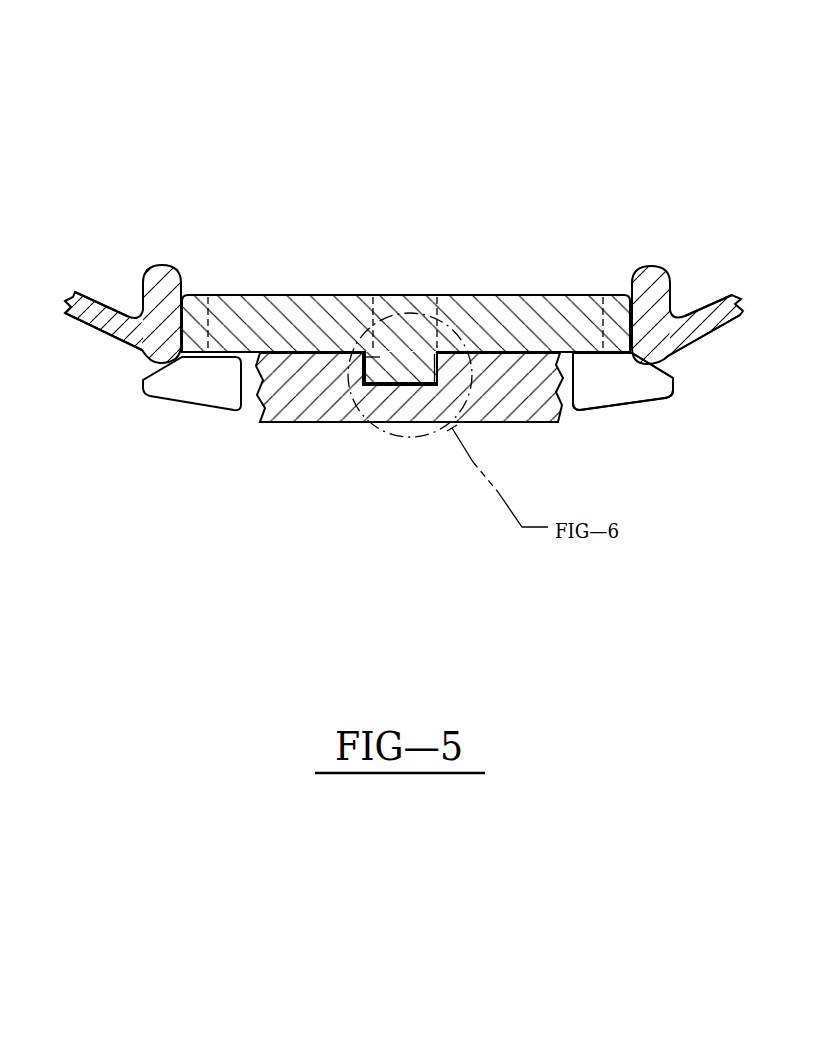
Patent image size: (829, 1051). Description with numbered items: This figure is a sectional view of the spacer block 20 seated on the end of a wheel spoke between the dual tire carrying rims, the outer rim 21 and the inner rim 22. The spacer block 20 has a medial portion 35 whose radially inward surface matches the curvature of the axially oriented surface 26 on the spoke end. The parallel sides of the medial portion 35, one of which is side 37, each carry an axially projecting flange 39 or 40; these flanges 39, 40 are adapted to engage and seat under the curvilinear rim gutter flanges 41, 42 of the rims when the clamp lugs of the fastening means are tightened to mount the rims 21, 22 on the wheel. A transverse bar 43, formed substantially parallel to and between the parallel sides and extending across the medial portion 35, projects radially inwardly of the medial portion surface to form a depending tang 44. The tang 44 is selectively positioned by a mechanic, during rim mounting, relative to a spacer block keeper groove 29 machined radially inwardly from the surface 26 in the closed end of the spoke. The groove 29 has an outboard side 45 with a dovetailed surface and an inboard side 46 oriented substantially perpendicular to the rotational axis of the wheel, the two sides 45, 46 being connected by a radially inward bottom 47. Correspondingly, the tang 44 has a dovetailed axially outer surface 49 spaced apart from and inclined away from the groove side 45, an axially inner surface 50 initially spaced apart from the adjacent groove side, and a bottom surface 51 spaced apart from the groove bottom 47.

The spacer block 20 is at (221, 155).
The outer rim 21 is at (128, 350).
The inner rim 22 is at (690, 350).
The axially oriented surface 26 is at (285, 372).
The spacer block keeper groove 29 is at (377, 397).
The medial portion 35 is at (543, 317).
The parallel side 37 is at (197, 303).
The axially projecting flange 39 is at (197, 393).
The axially projecting flange 40 is at (632, 388).
The rim gutter flange 41 is at (662, 265).
The rim gutter flange 42 is at (153, 265).
The transverse bar 43 is at (436, 368).
The depending tang 44 is at (420, 385).
The outboard groove side 45 is at (363, 375).
The inboard groove side 46 is at (440, 382).
The groove bottom 47 is at (417, 363).
The dovetailed axially outer surface 49 is at (363, 356).
The axially inner surface 50 is at (414, 350).
The bottom surface 51 is at (430, 383).